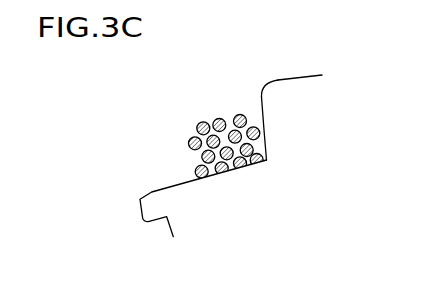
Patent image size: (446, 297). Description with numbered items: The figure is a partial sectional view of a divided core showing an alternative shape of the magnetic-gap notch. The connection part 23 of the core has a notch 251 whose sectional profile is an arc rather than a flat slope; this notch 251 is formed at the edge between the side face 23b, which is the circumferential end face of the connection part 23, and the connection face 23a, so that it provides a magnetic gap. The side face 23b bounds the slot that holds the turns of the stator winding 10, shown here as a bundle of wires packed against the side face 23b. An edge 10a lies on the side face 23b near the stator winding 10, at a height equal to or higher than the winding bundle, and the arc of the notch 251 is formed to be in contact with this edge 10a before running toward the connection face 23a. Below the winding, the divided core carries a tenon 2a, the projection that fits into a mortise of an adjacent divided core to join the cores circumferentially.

The stator winding 10 is at (173, 115).
The edge 10a is at (252, 110).
The connection part 23 is at (315, 98).
The connection face 23a is at (293, 76).
The side face 23b is at (228, 126).
The notch 251 is at (259, 121).
The tenon 2a is at (150, 192).